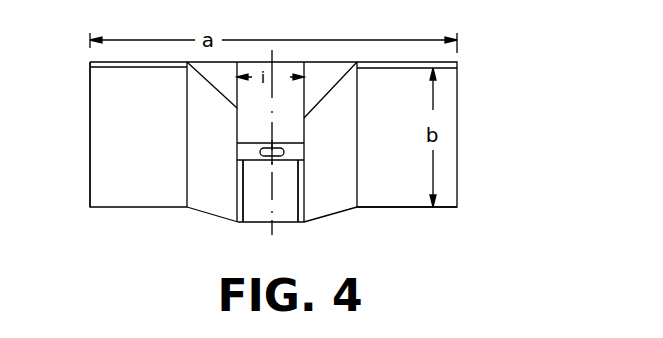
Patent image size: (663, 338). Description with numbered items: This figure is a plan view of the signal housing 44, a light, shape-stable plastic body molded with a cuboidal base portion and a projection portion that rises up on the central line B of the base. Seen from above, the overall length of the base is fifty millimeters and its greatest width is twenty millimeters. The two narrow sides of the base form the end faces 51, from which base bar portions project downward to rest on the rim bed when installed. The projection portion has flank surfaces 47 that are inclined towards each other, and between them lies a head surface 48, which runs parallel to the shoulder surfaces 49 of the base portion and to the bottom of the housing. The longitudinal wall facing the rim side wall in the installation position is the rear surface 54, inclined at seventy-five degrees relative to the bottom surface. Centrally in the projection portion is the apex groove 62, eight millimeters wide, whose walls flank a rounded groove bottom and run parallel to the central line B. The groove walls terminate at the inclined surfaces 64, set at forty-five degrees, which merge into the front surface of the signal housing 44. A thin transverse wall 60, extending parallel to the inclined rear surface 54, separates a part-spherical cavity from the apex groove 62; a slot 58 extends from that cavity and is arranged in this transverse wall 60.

The signal housing 44 is at (484, 78).
The end face 51 is at (90, 103).
The rear surface 54 is at (401, 214).
The shoulder surface 49 is at (160, 150).
The flank surface 47 is at (226, 171).
The head surface 48 is at (287, 207).
The apex groove 62 is at (260, 100).
The inclined surface 64 is at (325, 76).
The slot 58 is at (265, 160).
The transverse wall 60 is at (290, 150).
The central line B is at (273, 130).